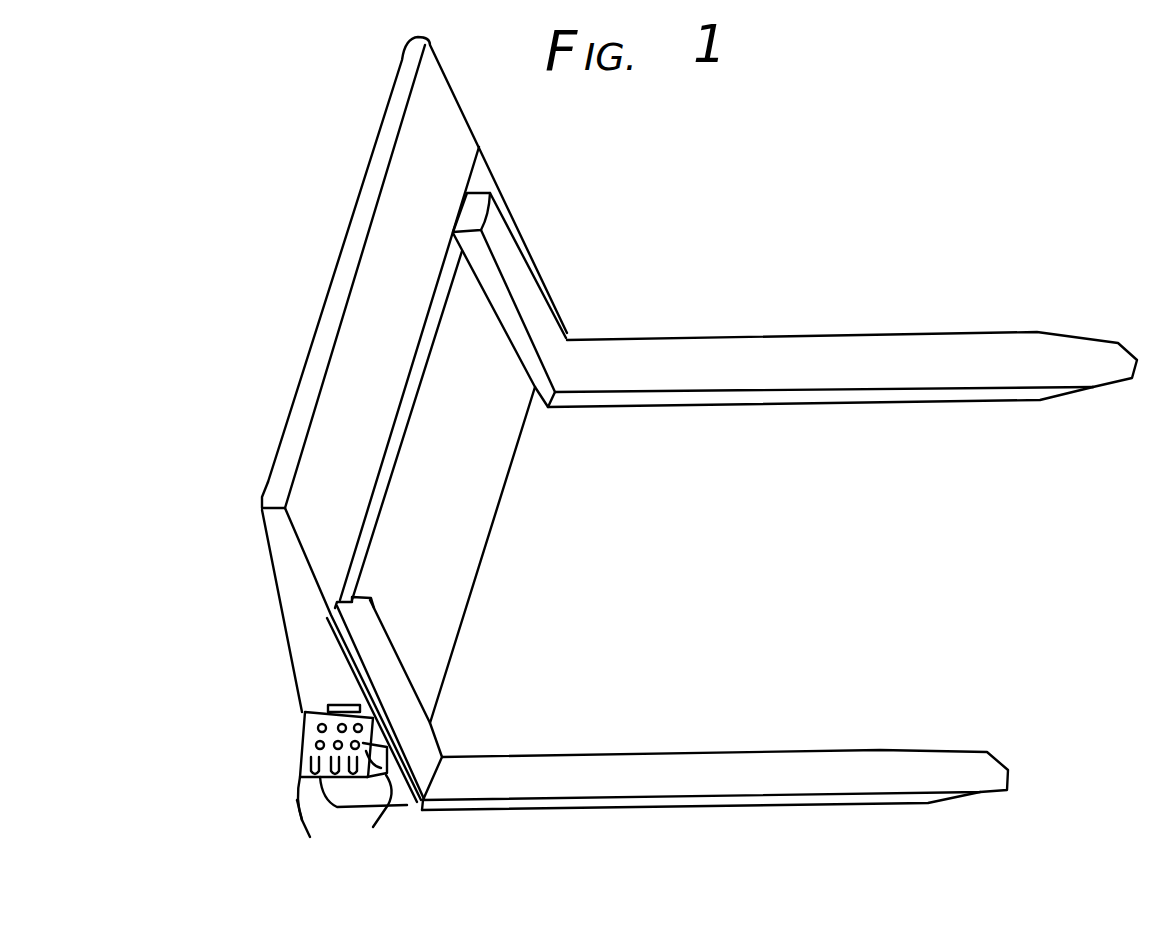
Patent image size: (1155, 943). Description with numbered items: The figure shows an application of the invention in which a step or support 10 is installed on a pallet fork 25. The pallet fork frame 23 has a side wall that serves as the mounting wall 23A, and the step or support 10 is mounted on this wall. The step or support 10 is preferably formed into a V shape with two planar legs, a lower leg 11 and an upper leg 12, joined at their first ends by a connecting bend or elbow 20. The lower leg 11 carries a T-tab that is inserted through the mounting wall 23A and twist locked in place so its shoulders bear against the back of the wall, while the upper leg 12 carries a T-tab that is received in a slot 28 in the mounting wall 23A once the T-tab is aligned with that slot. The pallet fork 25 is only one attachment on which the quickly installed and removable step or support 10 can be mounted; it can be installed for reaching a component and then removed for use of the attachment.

The step or support 10 is at (292, 785).
The lower leg 11 is at (387, 803).
The upper leg 12 is at (362, 690).
The connecting bend or elbow 20 is at (346, 820).
The pallet fork frame 23 is at (285, 470).
The mounting wall 23A is at (317, 693).
The pallet fork 25 is at (275, 686).
The slot 28 is at (336, 706).